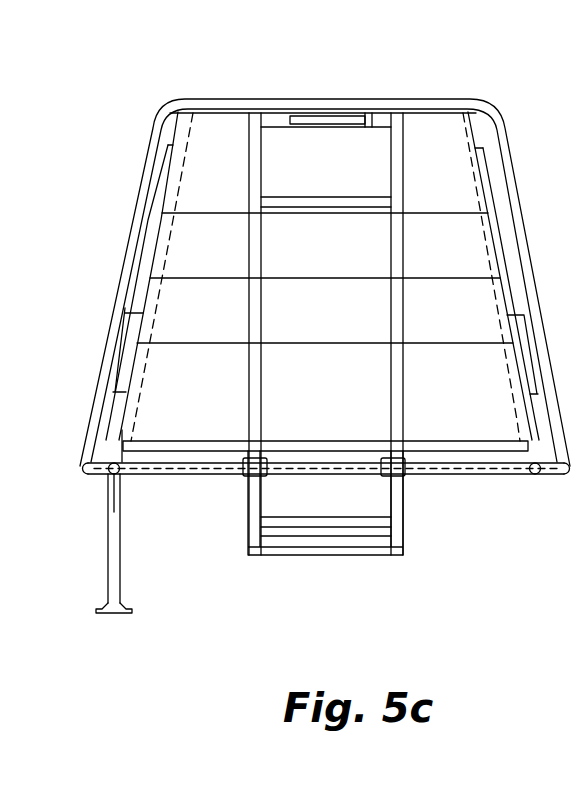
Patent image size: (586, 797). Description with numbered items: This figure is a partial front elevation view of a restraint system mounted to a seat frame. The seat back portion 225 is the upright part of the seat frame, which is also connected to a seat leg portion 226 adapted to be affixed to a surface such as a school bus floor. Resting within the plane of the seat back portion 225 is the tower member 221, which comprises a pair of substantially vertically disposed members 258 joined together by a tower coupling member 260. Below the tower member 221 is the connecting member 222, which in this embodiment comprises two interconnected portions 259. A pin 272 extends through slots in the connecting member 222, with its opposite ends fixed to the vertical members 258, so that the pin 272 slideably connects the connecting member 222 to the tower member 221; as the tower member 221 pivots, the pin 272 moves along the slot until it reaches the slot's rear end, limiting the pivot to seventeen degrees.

The tower member 221 is at (398, 178).
The connecting member 222 is at (275, 527).
The seat back portion 225 is at (146, 172).
The seat leg portion 226 is at (113, 568).
The vertically disposed members 258 is at (256, 228).
The interconnected portions 259 is at (276, 485).
The tower coupling member 260 is at (297, 199).
The pin 272 is at (322, 522).